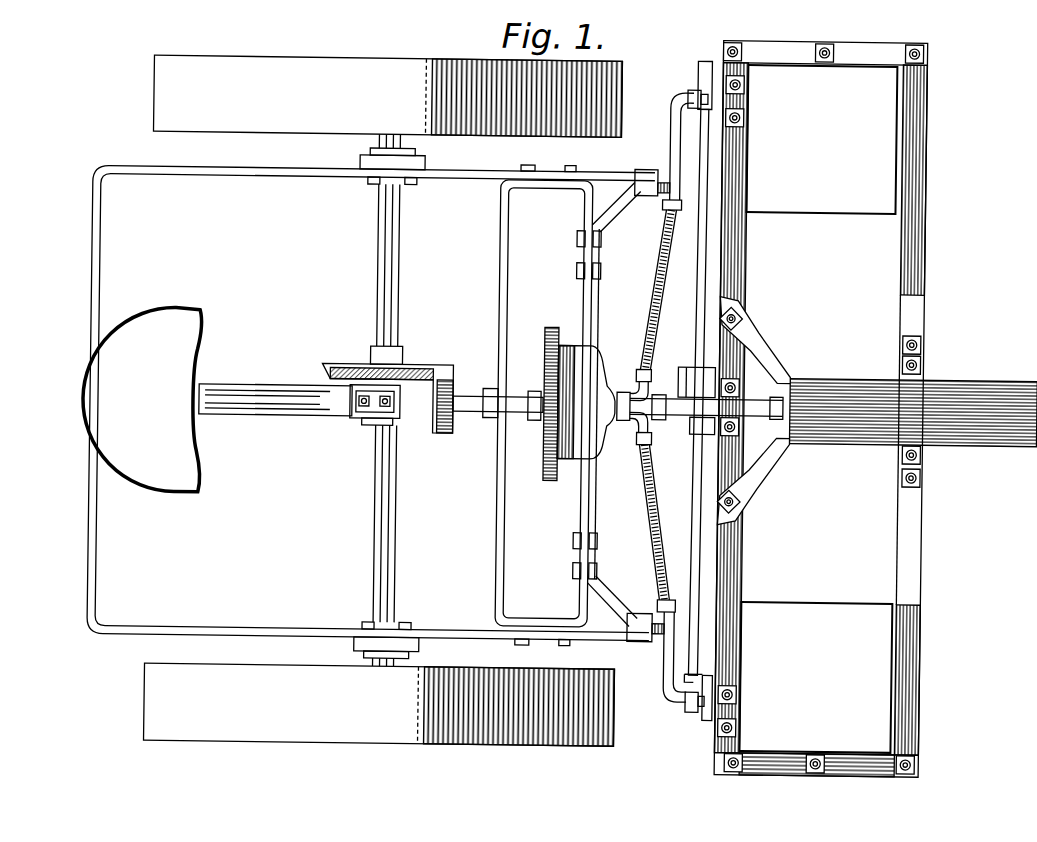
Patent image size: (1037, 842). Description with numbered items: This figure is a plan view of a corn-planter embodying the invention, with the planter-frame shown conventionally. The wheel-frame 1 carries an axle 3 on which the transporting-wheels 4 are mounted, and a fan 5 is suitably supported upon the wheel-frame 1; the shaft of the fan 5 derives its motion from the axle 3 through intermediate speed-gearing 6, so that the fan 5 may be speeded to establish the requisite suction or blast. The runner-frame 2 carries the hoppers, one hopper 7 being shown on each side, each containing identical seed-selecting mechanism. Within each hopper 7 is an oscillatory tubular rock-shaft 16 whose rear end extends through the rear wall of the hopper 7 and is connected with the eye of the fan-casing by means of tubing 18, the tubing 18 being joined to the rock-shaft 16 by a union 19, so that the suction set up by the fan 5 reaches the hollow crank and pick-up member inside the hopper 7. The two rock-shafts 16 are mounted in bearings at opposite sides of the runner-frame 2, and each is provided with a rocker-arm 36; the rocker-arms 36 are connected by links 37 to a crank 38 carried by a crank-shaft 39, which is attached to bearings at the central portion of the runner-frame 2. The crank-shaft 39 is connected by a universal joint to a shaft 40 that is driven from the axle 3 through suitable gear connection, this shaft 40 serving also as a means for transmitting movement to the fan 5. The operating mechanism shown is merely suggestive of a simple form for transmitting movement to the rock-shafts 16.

The wheel-frame 1 is at (281, 179).
The runner-frame 2 is at (913, 199).
The axle 3 is at (398, 288).
The transporting-wheels 4 is at (238, 65).
The fan 5 is at (590, 372).
The speed-gearing 6 is at (444, 431).
The hopper 7 is at (836, 207).
The tubular rock-shaft 16 is at (684, 93).
The tubing 18 is at (660, 264).
The union 19 is at (667, 98).
The rocker-arm 36 is at (708, 58).
The links 37 is at (698, 303).
The crank 38 is at (689, 366).
The crank-shaft 39 is at (793, 377).
The shaft 40 is at (524, 413).